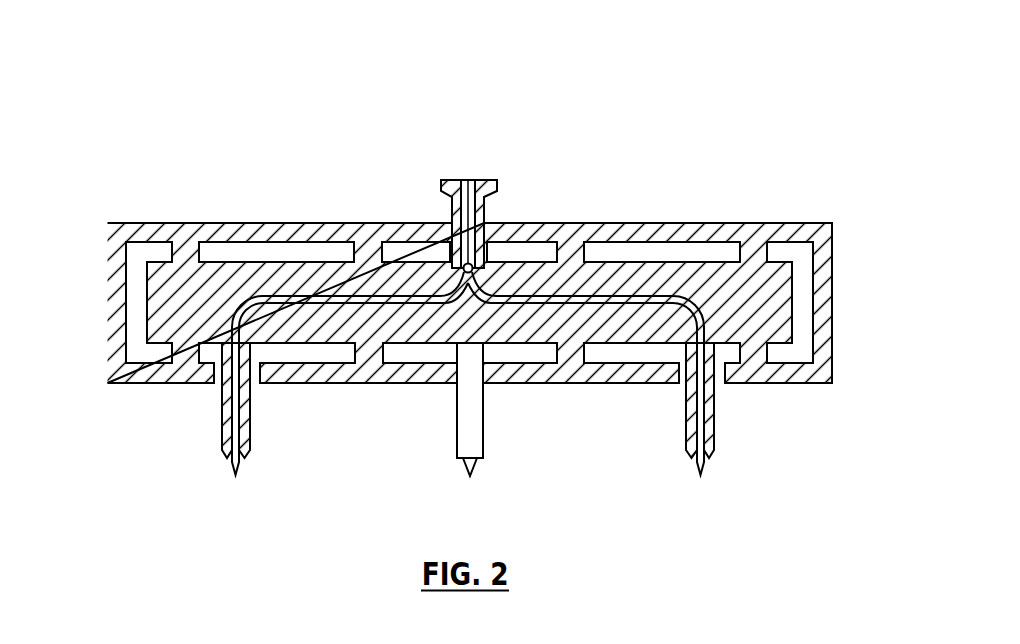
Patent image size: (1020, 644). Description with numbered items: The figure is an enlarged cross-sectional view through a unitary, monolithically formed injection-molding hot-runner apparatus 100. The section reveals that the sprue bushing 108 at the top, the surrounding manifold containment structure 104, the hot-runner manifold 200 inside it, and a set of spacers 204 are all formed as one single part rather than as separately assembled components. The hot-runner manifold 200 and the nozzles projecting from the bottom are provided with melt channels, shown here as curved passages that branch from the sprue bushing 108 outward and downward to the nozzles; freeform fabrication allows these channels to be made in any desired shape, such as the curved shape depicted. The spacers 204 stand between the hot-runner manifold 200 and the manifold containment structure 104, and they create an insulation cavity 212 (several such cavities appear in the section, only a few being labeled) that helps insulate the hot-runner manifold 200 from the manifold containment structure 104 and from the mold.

The hot-runner apparatus 100 is at (763, 176).
The manifold containment structure 104 is at (652, 223).
The sprue bushing 108 is at (449, 167).
The hot-runner manifold 200 is at (170, 290).
The spacers 204 is at (213, 257).
The insulation cavity 212 is at (140, 252).